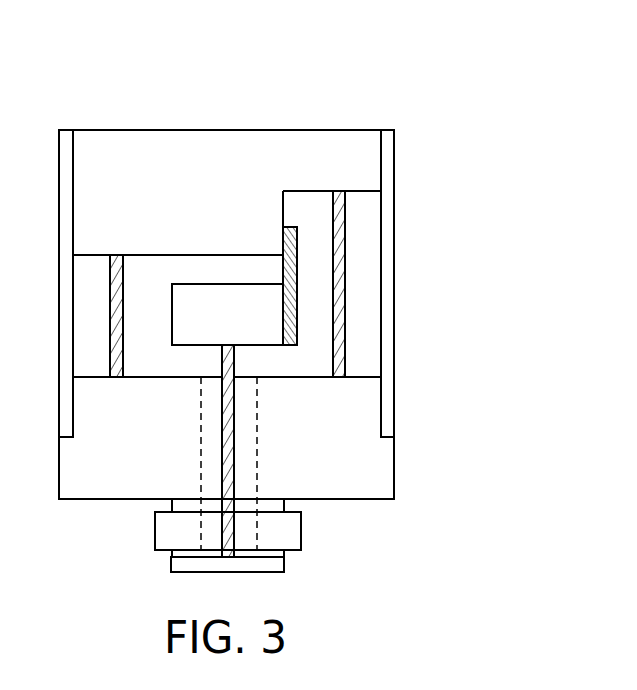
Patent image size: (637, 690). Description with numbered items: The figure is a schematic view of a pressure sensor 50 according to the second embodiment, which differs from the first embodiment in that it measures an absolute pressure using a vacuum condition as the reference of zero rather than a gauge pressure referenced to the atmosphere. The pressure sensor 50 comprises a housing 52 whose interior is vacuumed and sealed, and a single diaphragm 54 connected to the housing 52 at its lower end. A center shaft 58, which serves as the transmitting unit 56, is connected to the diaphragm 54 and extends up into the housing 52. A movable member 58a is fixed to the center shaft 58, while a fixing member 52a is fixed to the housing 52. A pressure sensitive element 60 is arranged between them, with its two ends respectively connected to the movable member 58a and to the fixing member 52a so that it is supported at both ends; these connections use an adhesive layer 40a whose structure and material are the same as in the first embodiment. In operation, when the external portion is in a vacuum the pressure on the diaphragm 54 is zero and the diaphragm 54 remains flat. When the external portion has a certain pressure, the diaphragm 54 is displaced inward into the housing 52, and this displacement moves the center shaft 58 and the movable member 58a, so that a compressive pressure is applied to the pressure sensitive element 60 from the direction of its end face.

The pressure sensor 50 is at (487, 68).
The housing 52 is at (317, 130).
The fixing member 52a is at (283, 237).
The diaphragm 54 is at (285, 563).
The transmitting unit 56 is at (222, 360).
The center shaft 58 is at (222, 360).
The movable member 58a is at (196, 285).
The pressure sensitive element 60 is at (295, 323).
The adhesive layer 40a is at (286, 227).